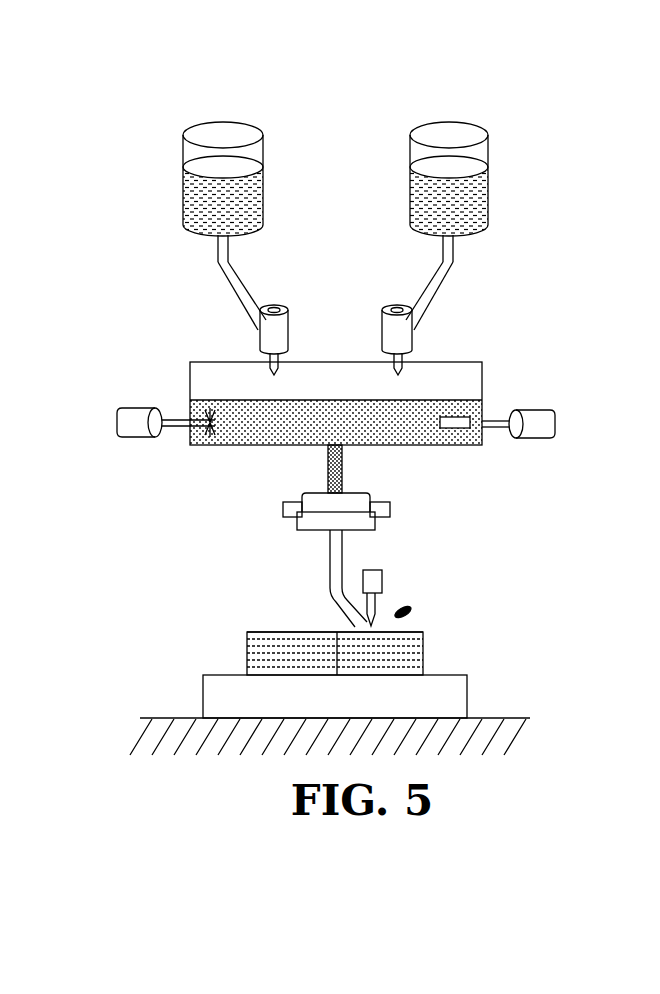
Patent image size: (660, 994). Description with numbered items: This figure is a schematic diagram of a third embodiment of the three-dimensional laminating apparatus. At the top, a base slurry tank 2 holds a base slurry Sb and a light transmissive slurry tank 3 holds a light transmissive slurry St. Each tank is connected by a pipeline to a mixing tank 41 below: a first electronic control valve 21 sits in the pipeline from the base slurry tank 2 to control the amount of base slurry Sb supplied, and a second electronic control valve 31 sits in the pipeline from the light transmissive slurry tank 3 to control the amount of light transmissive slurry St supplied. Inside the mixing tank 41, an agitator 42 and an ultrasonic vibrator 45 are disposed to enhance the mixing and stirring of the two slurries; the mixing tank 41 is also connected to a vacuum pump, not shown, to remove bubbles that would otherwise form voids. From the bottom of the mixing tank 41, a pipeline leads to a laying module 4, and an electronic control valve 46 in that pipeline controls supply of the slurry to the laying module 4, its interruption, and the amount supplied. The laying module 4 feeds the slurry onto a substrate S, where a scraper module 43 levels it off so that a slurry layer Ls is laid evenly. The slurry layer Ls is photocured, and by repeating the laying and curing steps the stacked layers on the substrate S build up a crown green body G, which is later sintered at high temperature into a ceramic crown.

The base slurry tank 2 is at (235, 122).
The light transmissive slurry tank 3 is at (459, 122).
The base slurry Sb is at (183, 205).
The light transmissive slurry St is at (488, 205).
The first electronic control valve 21 is at (258, 325).
The second electronic control valve 31 is at (405, 325).
The mixing tank 41 is at (218, 445).
The agitator 42 is at (172, 430).
The ultrasonic vibrator 45 is at (537, 412).
The electronic control valve 46 is at (313, 522).
The scraper module 43 is at (382, 578).
The laying module 4 is at (410, 608).
The crown green body G is at (424, 645).
The slurry layer Ls is at (247, 648).
The substrate S is at (468, 695).